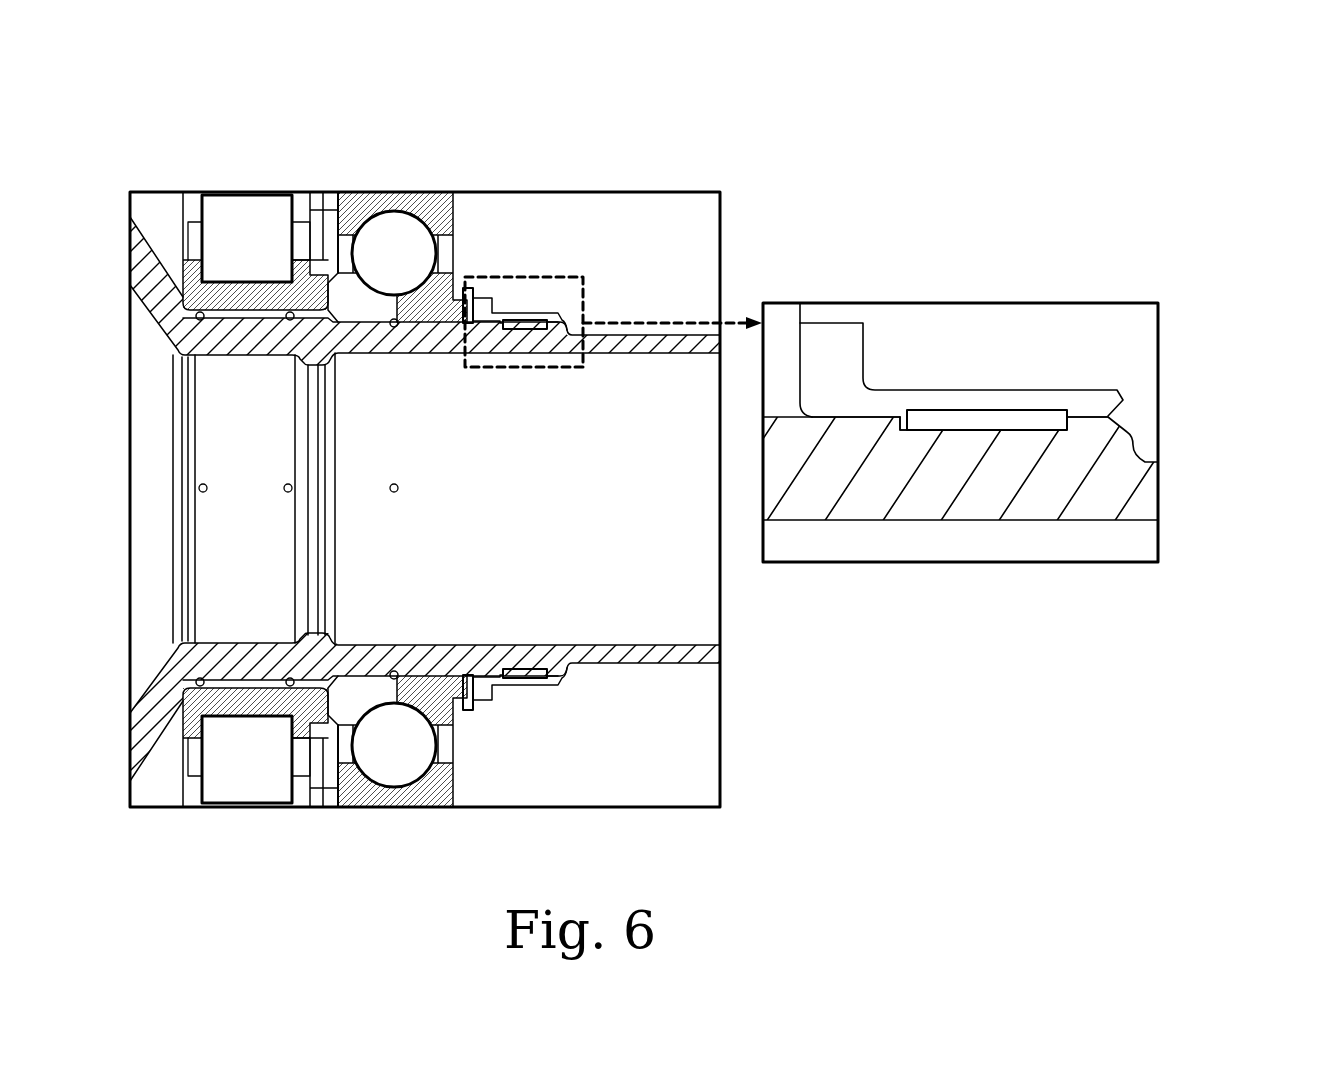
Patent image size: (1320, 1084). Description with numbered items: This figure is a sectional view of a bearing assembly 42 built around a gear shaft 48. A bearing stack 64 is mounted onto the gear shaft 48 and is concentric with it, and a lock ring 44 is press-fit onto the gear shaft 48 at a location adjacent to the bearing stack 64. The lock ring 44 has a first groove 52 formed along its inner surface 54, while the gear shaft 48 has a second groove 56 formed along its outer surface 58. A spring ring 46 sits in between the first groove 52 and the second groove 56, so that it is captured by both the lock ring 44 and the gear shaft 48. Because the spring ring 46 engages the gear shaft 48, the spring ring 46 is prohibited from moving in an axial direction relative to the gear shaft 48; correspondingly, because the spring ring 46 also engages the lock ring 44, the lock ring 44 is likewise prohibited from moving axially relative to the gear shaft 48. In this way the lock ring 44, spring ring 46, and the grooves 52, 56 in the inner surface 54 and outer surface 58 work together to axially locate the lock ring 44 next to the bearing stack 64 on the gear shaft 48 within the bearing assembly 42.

The bearing assembly 42 is at (414, 124).
The lock ring 44 is at (940, 390).
The spring ring 46 is at (1028, 408).
The gear shaft 48 is at (549, 528).
The first groove 52 is at (1078, 407).
The inner surface 54 is at (828, 424).
The second groove 56 is at (896, 433).
The outer surface 58 is at (860, 408).
The bearing stack 64 is at (238, 192).